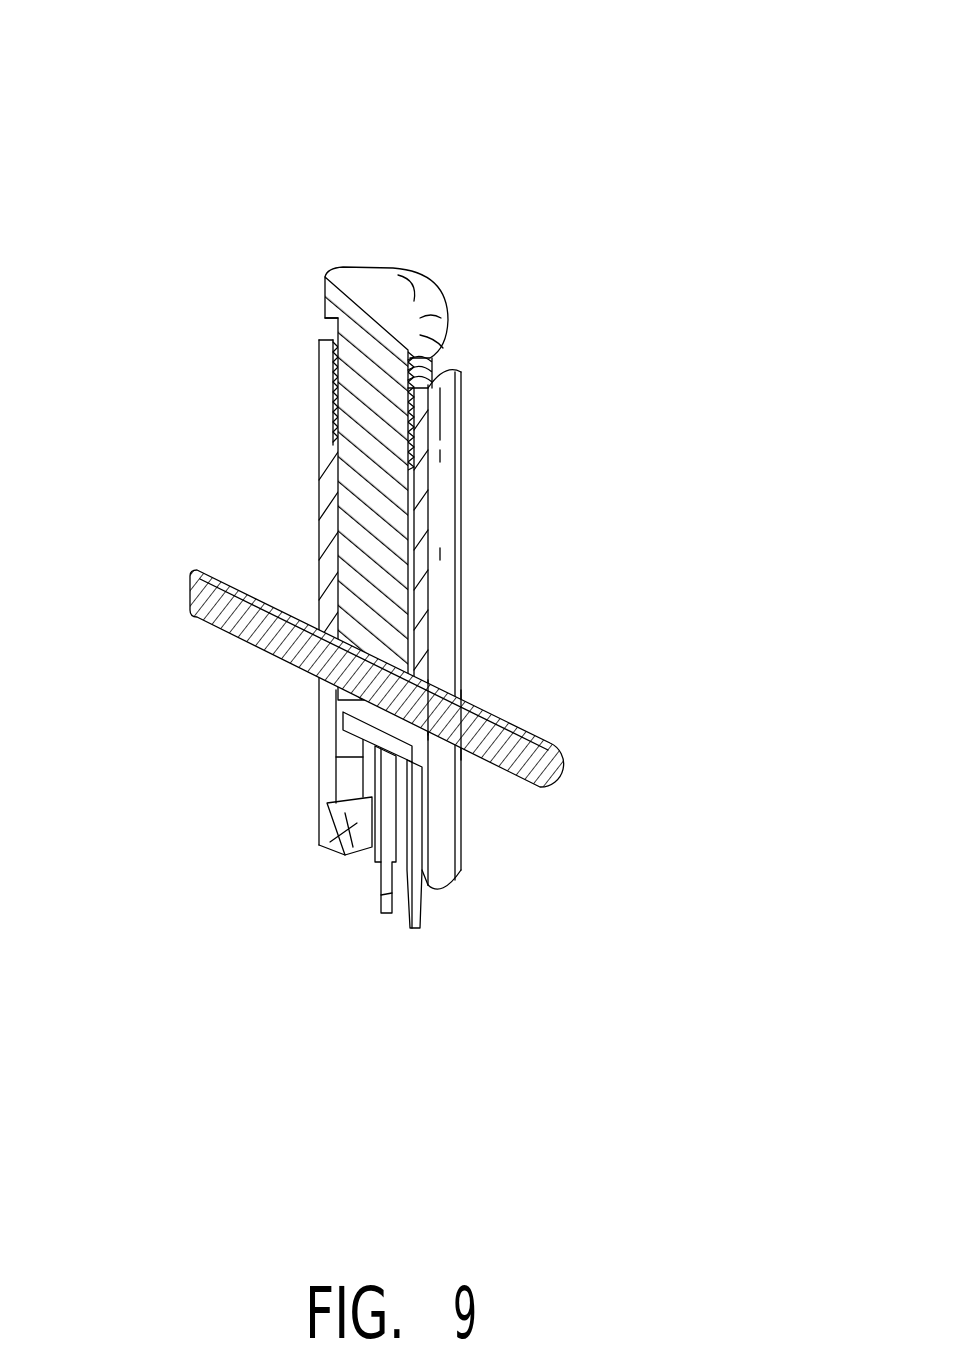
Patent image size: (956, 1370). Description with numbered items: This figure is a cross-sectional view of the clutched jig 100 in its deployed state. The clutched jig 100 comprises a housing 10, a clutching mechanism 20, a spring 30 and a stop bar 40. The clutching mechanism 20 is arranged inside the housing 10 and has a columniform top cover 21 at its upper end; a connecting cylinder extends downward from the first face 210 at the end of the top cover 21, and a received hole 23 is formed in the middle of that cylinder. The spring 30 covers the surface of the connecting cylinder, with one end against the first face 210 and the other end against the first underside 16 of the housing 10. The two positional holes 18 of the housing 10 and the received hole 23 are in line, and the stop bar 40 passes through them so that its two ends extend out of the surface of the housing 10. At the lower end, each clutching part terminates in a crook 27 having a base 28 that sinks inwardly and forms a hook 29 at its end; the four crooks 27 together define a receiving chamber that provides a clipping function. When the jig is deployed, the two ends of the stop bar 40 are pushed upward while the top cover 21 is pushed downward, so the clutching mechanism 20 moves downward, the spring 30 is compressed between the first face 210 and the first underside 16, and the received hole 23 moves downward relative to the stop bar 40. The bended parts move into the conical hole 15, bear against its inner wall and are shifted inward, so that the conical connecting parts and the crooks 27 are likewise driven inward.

The clutched jig 100 is at (130, 48).
The housing 10 is at (414, 614).
The conical hole 15 is at (335, 850).
The first underside 16 is at (333, 422).
The positional holes 18 is at (442, 683).
The clutching mechanism 20 is at (397, 593).
The top cover 21 is at (328, 283).
The first face 210 is at (323, 317).
The received hole 23 is at (350, 693).
The crook 27 is at (423, 893).
The base 28 is at (420, 920).
The hook 29 is at (410, 928).
The spring 30 is at (450, 357).
The stop bar 40 is at (573, 745).